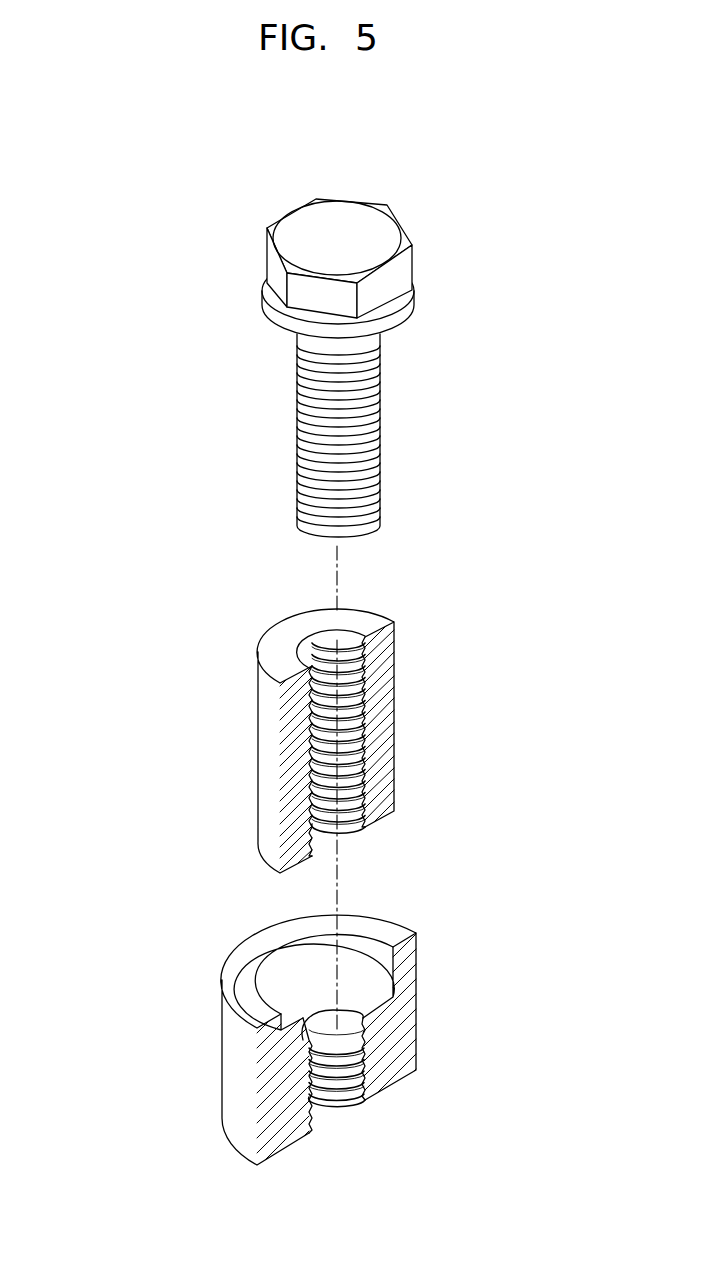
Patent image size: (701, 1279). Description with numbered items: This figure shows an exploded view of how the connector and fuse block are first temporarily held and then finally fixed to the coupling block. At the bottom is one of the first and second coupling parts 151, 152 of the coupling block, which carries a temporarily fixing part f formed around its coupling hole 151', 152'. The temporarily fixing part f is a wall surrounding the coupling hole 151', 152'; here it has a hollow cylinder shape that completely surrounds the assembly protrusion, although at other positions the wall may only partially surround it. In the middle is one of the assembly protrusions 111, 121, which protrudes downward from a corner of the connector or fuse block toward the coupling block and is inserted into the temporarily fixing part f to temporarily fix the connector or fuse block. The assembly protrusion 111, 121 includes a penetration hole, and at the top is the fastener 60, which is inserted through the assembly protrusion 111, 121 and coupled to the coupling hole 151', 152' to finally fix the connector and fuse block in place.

The fastener 60 is at (450, 367).
The assembly protrusion 111 is at (411, 741).
The assembly protrusion 121 is at (384, 723).
The first coupling part 151 is at (249, 1028).
The second coupling part 152 is at (249, 1028).
The coupling hole 151' is at (345, 1105).
The coupling hole 152' is at (345, 1105).
The temporarily fixing part f is at (373, 930).